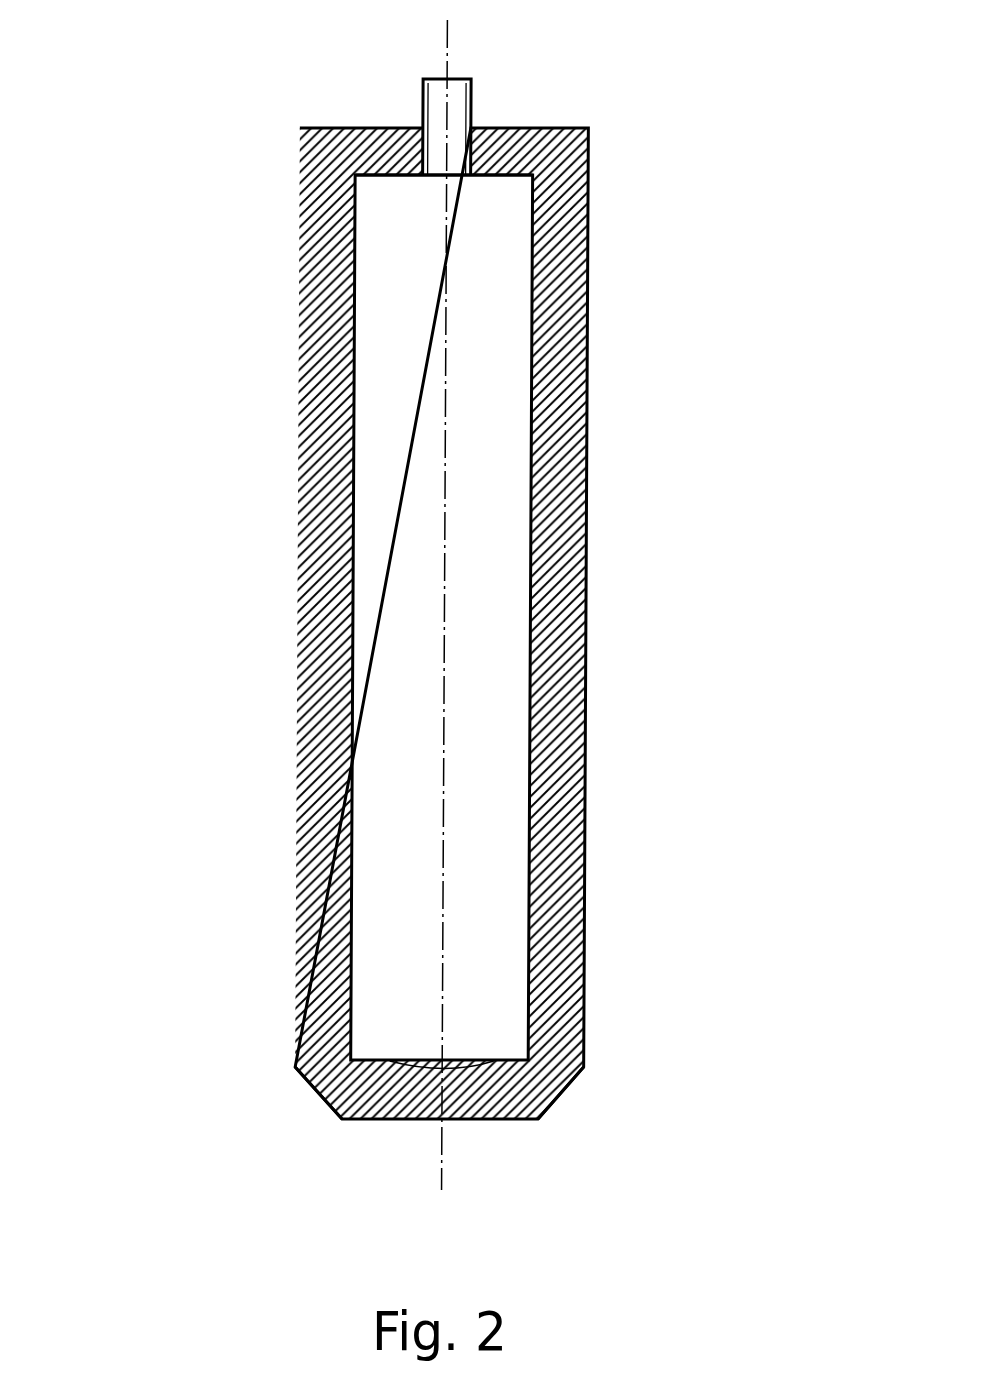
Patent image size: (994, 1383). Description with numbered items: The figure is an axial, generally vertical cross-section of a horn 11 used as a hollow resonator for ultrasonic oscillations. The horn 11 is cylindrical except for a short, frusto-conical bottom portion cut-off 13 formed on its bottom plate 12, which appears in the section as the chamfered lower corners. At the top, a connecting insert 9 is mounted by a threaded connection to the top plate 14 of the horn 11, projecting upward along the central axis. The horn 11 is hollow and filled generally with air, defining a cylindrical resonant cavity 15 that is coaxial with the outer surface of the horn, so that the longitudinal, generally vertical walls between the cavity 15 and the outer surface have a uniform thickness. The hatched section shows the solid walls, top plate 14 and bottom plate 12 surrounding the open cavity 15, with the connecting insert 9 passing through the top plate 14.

The connecting insert 9 is at (448, 117).
The horn 11 is at (300, 585).
The bottom plate 12 is at (554, 1108).
The bottom portion cut-off 13 is at (322, 1095).
The top plate 14 is at (503, 178).
The resonant cavity 15 is at (400, 983).